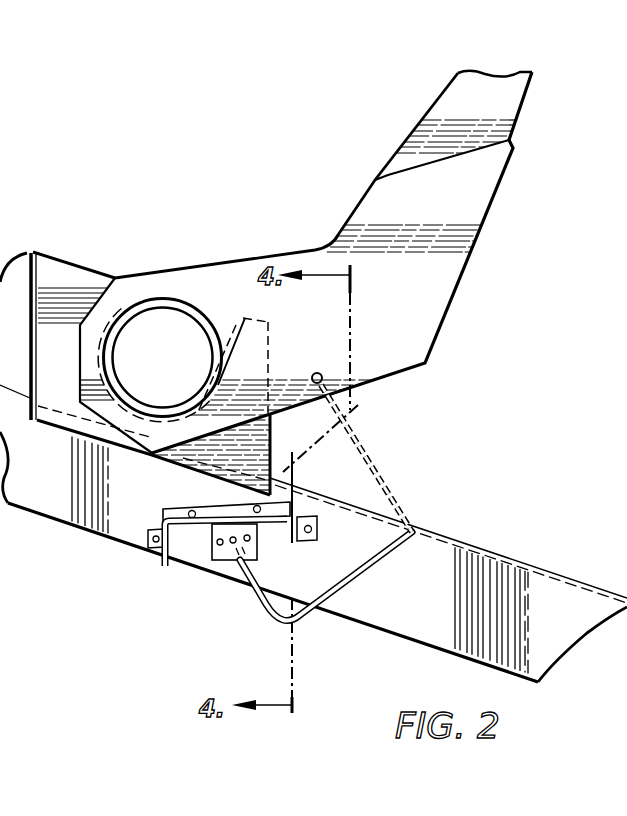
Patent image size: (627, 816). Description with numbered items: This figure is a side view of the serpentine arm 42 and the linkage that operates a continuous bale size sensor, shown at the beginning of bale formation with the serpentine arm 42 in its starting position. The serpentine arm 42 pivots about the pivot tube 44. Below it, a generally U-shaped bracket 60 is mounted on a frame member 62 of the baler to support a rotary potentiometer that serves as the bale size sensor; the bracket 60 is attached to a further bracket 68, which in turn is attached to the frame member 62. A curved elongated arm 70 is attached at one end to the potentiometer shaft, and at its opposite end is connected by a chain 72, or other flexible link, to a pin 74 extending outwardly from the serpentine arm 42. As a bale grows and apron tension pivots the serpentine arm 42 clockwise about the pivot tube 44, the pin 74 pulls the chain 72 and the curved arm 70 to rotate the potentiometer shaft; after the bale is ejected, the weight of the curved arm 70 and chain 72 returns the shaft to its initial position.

The serpentine arm 42 is at (494, 183).
The pivot tube 44 is at (158, 296).
The bracket 60 is at (223, 556).
The frame member 62 is at (67, 503).
The further bracket 68 is at (209, 510).
The curved elongated arm 70 is at (381, 566).
The chain 72 is at (384, 482).
The pin 74 is at (319, 372).